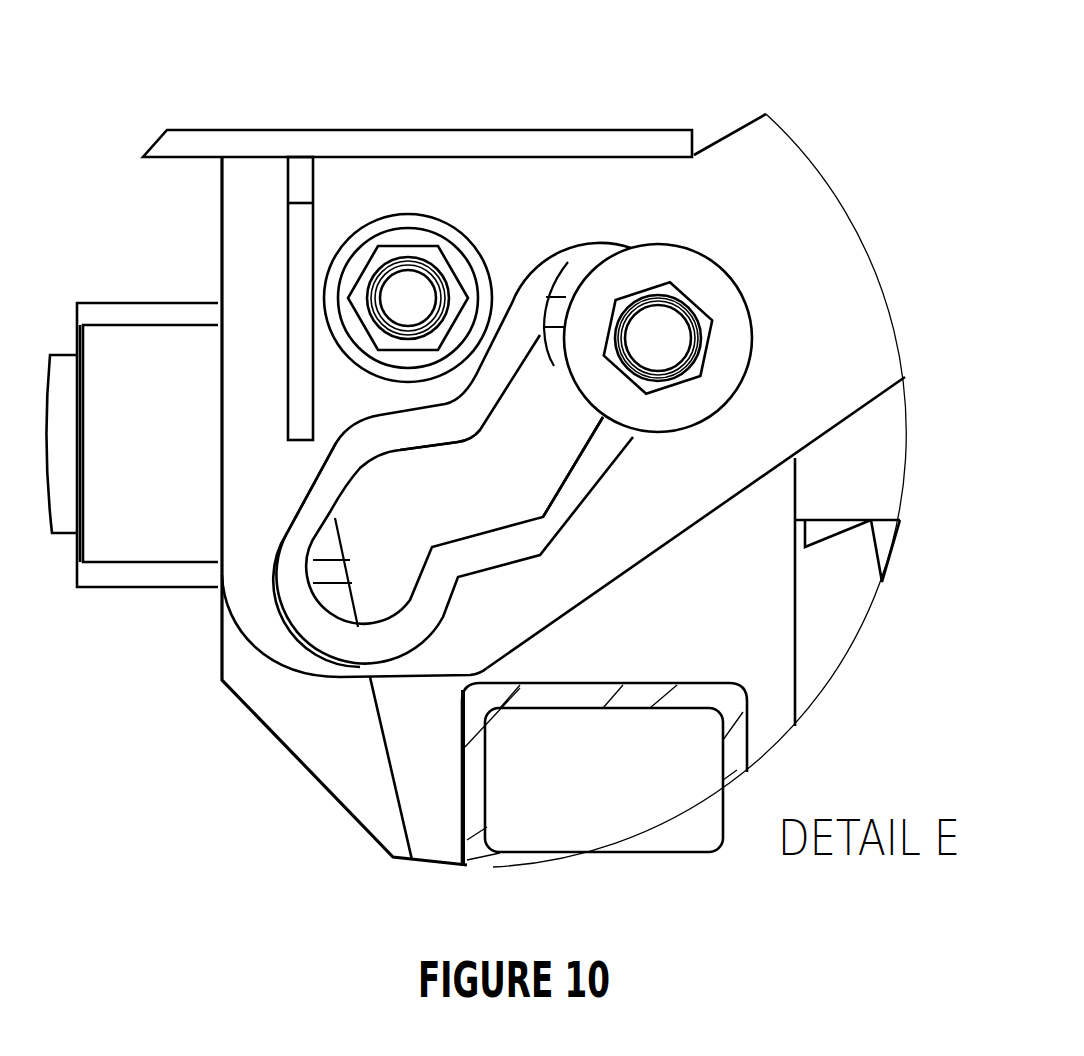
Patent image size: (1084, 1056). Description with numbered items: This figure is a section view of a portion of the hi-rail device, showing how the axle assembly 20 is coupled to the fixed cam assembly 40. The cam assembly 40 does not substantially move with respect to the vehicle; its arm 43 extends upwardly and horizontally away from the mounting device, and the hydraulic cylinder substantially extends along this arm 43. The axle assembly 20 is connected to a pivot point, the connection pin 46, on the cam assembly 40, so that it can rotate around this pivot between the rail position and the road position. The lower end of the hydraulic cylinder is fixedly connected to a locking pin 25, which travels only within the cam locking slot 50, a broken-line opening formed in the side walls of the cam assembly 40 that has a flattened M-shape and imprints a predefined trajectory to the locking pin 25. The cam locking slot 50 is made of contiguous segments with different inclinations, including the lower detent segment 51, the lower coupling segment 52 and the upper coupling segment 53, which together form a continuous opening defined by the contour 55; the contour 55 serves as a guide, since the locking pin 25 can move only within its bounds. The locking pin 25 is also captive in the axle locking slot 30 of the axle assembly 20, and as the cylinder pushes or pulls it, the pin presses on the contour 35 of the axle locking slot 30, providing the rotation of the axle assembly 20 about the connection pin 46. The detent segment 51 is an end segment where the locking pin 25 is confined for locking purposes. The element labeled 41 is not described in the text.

The axle assembly 20 is at (393, 750).
The locking pin 25 is at (667, 328).
The axle locking slot 30 is at (552, 330).
The contour 35 is at (550, 345).
The cam assembly 40 is at (438, 113).
The top plate 41 is at (250, 140).
The arm 43 is at (861, 314).
The connection pin 46 is at (408, 300).
The cam locking slot 50 is at (480, 505).
The lower detent segment 51 is at (378, 566).
The lower coupling segment 52 is at (468, 500).
The upper coupling segment 53 is at (578, 441).
The contour 55 is at (317, 537).